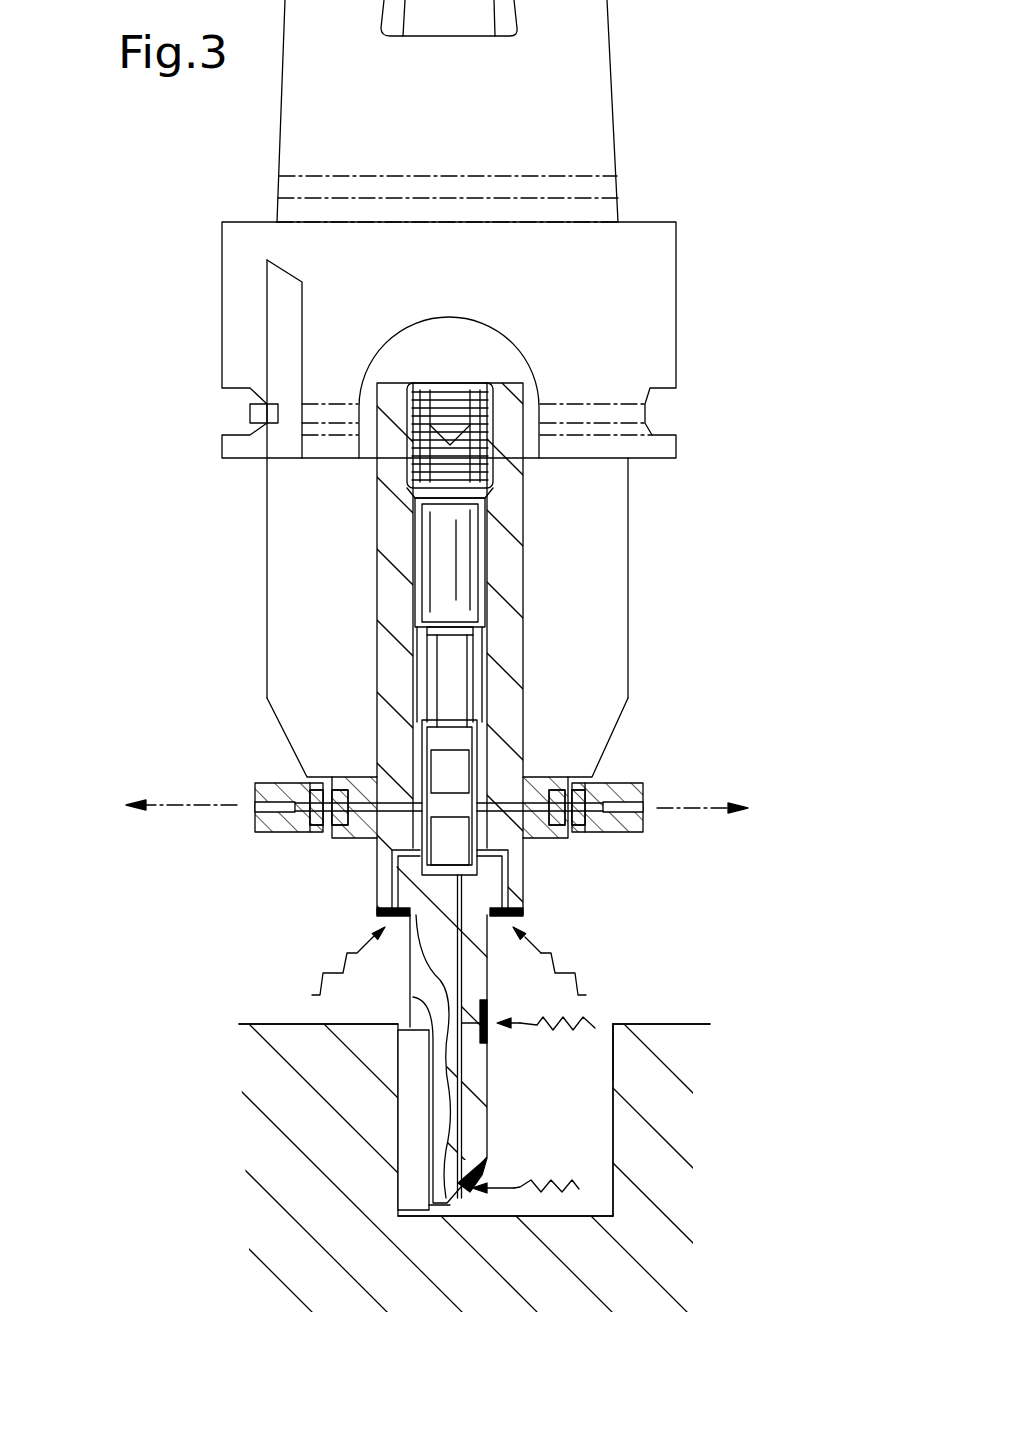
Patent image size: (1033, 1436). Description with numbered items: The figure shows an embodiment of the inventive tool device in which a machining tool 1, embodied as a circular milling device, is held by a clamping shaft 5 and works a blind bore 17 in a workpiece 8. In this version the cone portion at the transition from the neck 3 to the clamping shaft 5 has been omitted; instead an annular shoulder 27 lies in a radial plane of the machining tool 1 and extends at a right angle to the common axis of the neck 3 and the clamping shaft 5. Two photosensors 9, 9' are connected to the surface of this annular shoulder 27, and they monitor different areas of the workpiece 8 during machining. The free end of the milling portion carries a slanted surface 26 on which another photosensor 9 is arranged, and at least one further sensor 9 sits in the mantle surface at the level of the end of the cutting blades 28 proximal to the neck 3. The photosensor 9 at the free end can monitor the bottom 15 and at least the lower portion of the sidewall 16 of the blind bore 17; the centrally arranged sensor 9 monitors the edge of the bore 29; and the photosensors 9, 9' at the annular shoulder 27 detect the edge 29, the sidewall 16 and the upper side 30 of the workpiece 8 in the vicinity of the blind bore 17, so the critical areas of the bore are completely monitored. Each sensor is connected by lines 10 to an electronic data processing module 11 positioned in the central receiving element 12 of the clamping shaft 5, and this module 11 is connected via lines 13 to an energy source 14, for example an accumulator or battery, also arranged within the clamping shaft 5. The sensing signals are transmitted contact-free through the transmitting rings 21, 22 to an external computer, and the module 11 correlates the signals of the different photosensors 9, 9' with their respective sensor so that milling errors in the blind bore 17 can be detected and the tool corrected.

The machining tool 1 is at (490, 1112).
The neck 3 is at (432, 985).
The clamping shaft 5 is at (500, 640).
The workpiece 8 is at (302, 1158).
The photosensor 9 is at (539, 1043).
The photosensor 9' is at (346, 951).
The lines 10 is at (455, 985).
The electronic data processing module 11 is at (447, 768).
The axial receiving element 12 is at (480, 737).
The lines 13 is at (437, 676).
The energy source 14 is at (437, 582).
The bottom of the blind bore 15 is at (563, 1213).
The sidewall of the blind bore 16 is at (613, 1066).
The blind bore 17 is at (573, 1052).
The transmitting ring 21 is at (330, 803).
The transmitting ring 22 is at (332, 836).
The slanted surface 26 is at (433, 1174).
The annular shoulder 27 is at (517, 902).
The cutting blades 28 is at (411, 1070).
The edge of the bore 29 is at (615, 1025).
The upper side 30 is at (254, 1024).